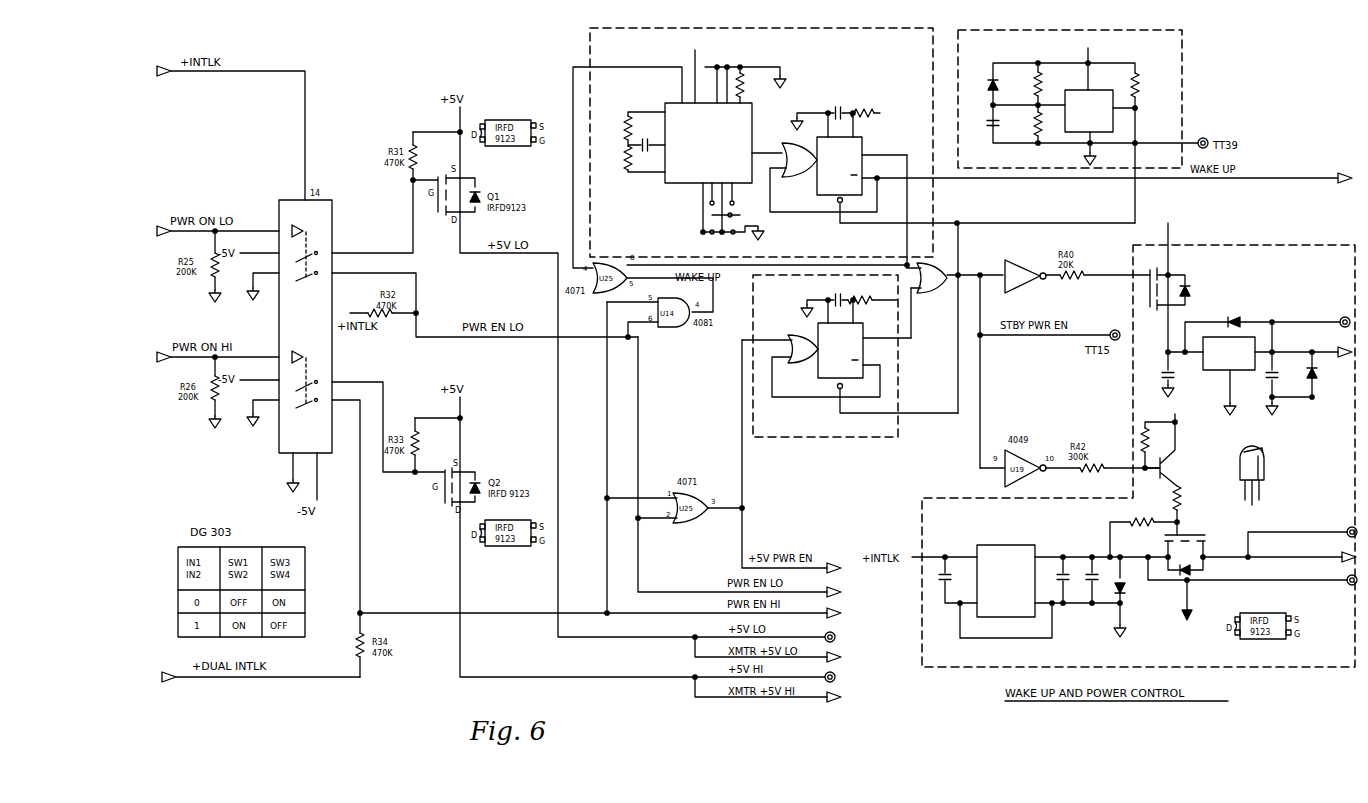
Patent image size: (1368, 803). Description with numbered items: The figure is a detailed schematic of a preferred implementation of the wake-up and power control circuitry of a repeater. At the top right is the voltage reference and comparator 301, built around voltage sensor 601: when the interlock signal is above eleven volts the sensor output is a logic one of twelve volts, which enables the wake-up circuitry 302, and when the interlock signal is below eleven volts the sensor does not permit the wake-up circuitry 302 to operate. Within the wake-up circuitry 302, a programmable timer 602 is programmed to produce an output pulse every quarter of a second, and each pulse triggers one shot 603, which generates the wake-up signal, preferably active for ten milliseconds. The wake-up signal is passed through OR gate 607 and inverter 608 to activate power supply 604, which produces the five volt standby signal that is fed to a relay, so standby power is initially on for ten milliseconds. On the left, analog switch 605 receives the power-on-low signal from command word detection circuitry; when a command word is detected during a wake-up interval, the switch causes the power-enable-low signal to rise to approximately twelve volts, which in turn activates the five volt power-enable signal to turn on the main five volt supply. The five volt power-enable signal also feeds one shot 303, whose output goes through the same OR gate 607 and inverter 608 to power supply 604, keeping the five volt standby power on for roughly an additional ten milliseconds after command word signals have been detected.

The voltage reference and comparator 301 is at (1183, 72).
The wake-up circuitry 302 is at (814, 29).
The one shot 303 is at (808, 438).
The voltage sensor 601 is at (1100, 84).
The programmable timer 602 is at (672, 185).
The one shot 603 is at (838, 205).
The power supply 604 is at (1306, 244).
The analog switch 605 is at (332, 212).
The OR gate 607 is at (936, 255).
The inverter 608 is at (1010, 262).